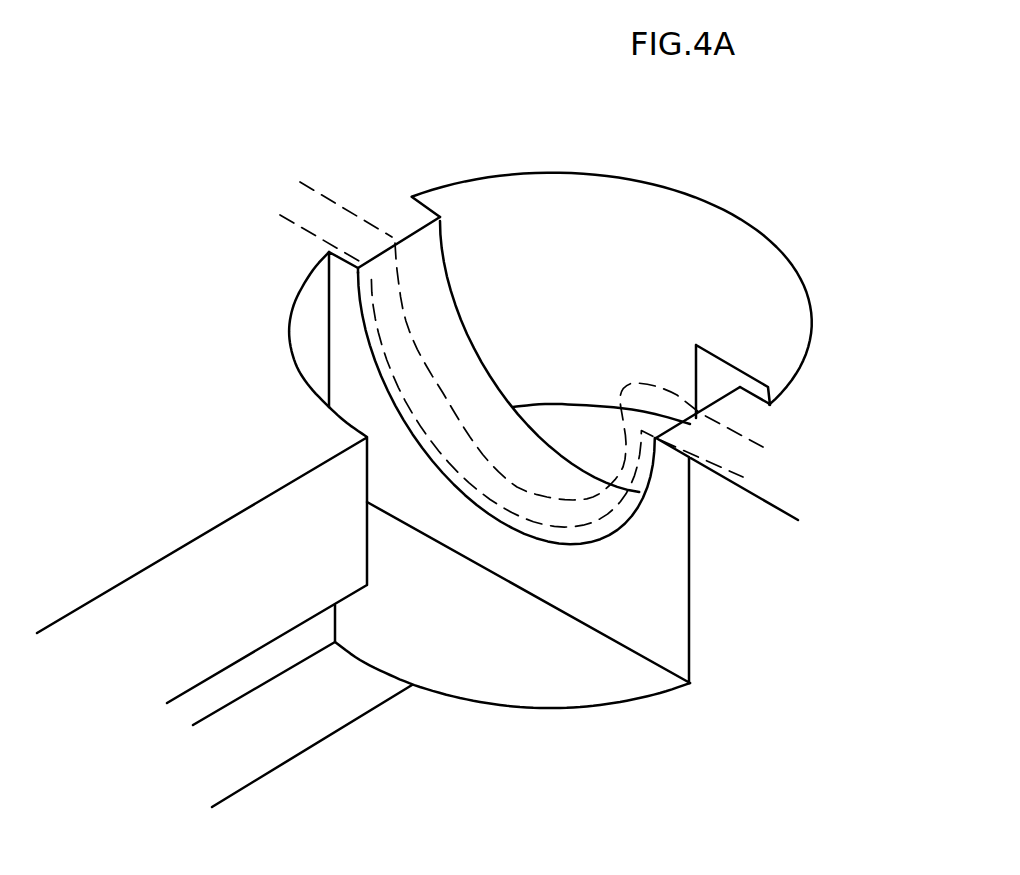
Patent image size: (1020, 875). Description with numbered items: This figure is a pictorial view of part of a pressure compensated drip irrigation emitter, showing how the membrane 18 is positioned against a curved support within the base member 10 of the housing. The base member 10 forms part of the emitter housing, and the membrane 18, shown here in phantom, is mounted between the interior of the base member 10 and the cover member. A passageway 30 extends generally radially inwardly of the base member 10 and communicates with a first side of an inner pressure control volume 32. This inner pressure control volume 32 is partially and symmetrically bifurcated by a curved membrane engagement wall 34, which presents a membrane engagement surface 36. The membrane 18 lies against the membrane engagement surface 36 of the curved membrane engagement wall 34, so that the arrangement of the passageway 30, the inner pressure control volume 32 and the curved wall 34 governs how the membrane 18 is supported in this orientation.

The base member 10 is at (220, 487).
The membrane 18 is at (378, 178).
The passageway 30 is at (283, 727).
The inner pressure control volume 32 is at (495, 645).
The curved membrane engagement wall 34 is at (363, 380).
The membrane engagement surface 36 is at (470, 370).